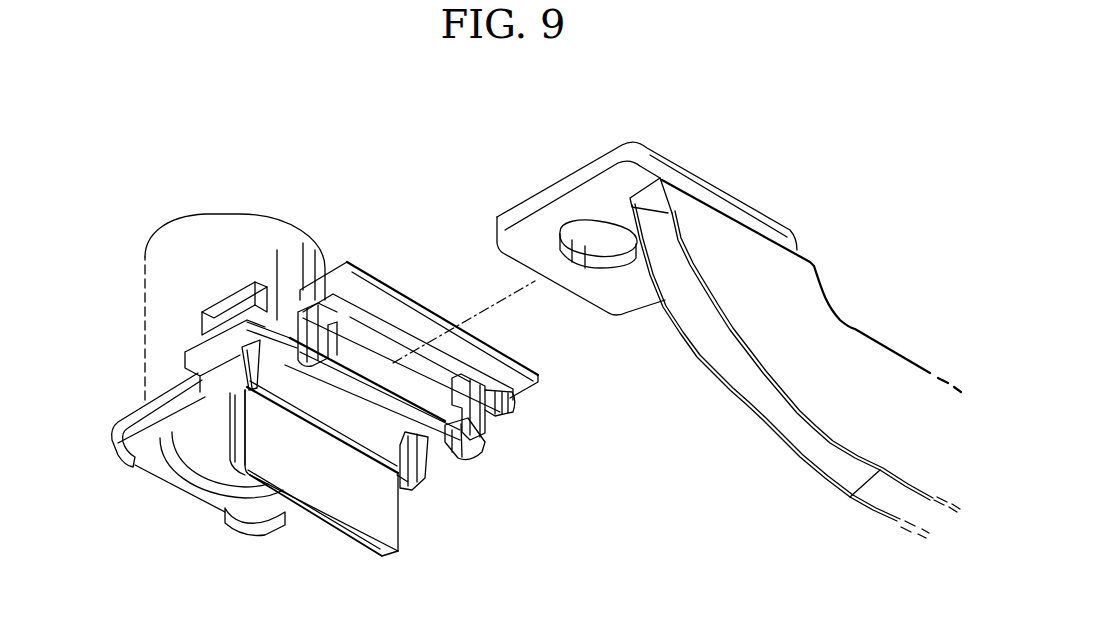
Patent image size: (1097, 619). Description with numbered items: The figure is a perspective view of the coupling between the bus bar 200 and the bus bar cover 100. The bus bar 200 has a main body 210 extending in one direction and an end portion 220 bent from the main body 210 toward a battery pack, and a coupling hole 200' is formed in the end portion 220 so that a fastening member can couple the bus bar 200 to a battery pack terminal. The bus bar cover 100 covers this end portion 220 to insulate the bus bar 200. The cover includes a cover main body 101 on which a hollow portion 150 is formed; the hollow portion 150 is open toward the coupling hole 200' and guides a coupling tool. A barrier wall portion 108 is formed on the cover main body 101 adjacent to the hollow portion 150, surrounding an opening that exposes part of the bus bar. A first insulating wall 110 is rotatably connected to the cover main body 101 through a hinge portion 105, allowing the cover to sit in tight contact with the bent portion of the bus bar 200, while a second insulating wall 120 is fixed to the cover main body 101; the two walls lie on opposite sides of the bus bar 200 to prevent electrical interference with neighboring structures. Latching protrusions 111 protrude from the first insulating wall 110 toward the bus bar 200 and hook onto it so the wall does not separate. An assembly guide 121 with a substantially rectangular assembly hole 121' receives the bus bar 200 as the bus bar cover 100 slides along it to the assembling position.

The bus bar cover 100 is at (118, 276).
The cover main body 101 is at (120, 435).
The hinge portion 105 is at (270, 327).
The barrier wall portion 108 is at (232, 310).
The first insulating wall 110 is at (362, 277).
The latching protrusion 111 is at (477, 447).
The second insulating wall 120 is at (387, 527).
The assembly guide 121 is at (430, 485).
The assembly hole 121' is at (300, 499).
The hollow portion 150 is at (173, 237).
The bus bar 200 is at (795, 398).
The coupling hole 200' is at (598, 299).
The main body 210 is at (866, 357).
The end portion 220 is at (543, 195).